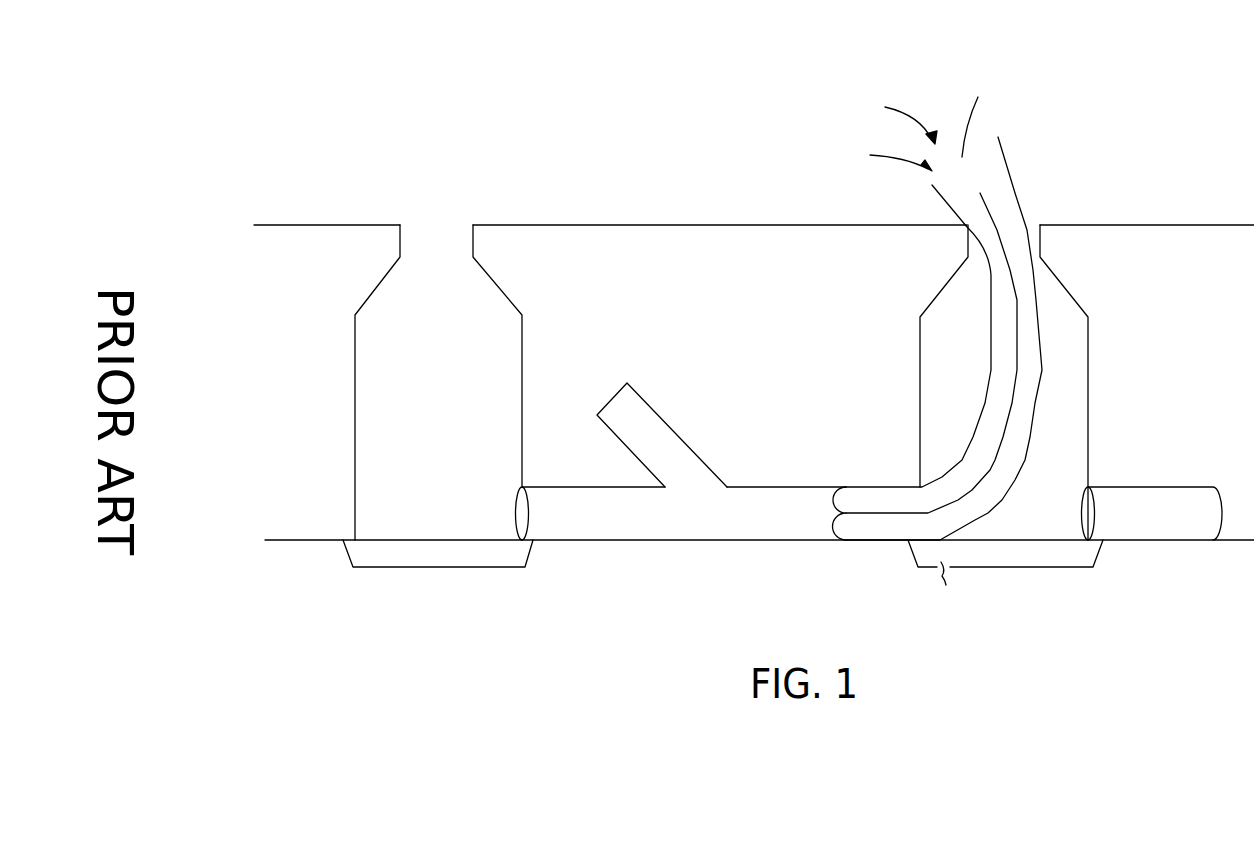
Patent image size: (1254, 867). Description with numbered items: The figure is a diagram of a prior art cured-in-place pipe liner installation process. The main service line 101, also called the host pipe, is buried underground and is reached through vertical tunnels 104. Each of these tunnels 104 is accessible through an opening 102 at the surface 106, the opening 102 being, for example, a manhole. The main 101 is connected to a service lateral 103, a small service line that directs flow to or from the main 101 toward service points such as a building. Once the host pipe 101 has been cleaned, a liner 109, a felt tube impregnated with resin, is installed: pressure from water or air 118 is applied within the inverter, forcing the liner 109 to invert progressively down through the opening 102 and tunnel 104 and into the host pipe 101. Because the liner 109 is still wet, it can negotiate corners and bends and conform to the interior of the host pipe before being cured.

The main service line 101 is at (748, 487).
The opening 102 is at (1030, 225).
The service lateral 103 is at (680, 392).
The vertical tunnel 104 is at (503, 367).
The surface 106 is at (757, 206).
The liner 109 is at (1004, 176).
The water or air 118 is at (939, 85).